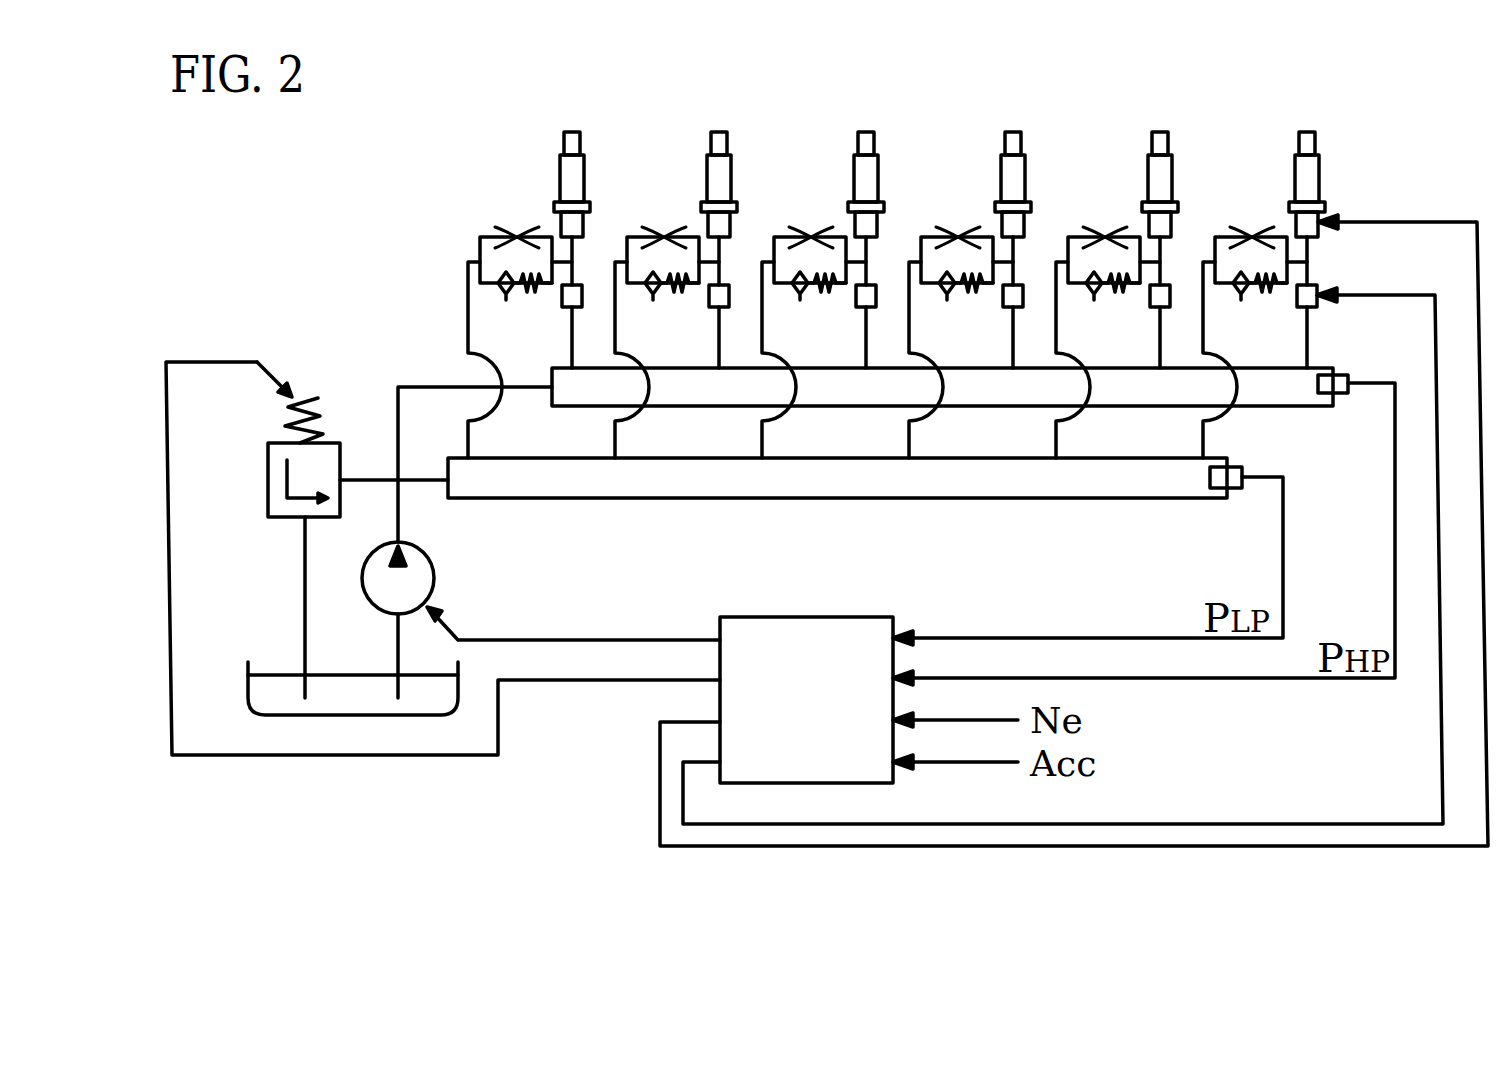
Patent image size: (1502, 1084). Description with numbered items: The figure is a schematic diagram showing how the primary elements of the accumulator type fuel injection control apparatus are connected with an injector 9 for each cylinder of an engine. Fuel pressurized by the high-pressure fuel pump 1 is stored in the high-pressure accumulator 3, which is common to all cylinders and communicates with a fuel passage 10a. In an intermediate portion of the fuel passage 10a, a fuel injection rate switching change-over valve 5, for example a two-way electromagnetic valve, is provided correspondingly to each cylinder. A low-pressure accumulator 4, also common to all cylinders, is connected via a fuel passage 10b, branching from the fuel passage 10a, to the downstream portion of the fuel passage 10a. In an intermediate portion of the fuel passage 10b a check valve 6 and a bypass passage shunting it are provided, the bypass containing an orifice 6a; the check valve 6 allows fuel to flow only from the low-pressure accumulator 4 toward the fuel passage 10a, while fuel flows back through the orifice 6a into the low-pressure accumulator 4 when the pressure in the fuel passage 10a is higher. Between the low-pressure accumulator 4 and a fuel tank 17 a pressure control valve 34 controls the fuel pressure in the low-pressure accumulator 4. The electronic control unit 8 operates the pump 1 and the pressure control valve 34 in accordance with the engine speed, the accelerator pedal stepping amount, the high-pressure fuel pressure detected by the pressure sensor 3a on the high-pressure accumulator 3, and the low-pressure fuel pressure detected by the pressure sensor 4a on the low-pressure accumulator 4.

The high-pressure fuel pump 1 is at (430, 562).
The high-pressure accumulator 3 is at (1298, 408).
The pressure sensor 3a is at (1338, 375).
The low-pressure accumulator 4 is at (622, 500).
The pressure sensor 4a is at (1232, 490).
The fuel injection rate switching change-over valve 5 is at (584, 293).
The check valve 6 is at (523, 285).
The orifice 6a is at (513, 228).
The electronic control unit 8 is at (826, 617).
The injector 9 is at (583, 168).
The fuel passage 10a is at (393, 400).
The fuel passage 10b is at (465, 286).
The fuel tank 17 is at (283, 672).
The pressure control valve 34 is at (268, 465).